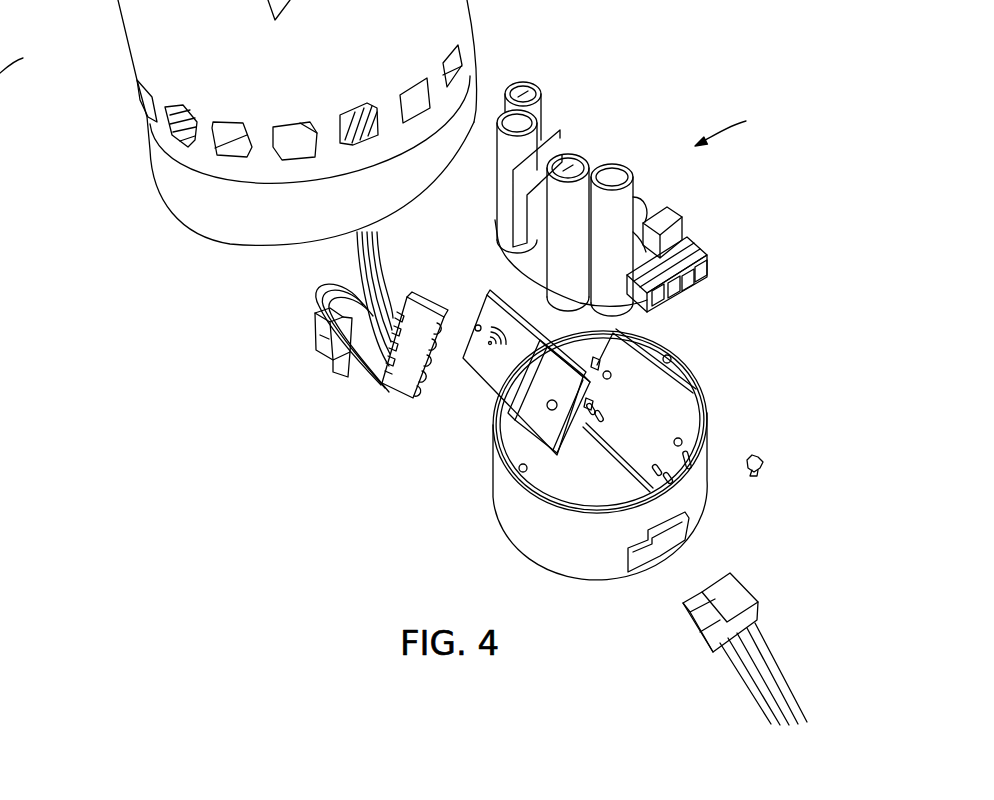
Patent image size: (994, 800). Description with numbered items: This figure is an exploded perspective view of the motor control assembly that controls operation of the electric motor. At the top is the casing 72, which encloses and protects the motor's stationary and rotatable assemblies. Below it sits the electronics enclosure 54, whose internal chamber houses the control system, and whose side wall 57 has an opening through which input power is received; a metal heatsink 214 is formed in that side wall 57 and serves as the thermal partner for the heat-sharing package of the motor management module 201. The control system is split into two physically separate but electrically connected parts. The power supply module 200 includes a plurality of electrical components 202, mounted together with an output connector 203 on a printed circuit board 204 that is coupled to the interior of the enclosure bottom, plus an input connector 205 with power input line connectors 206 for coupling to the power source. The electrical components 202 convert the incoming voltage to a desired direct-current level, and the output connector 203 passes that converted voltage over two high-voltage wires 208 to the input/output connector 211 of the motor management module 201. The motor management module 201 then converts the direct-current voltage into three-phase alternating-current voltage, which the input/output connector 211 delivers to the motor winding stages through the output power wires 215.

The casing 72 is at (130, 58).
The output power wires 215 is at (380, 248).
The high-voltage wires 208 is at (367, 367).
The output connector 203 is at (327, 330).
The input/output connector 211 is at (393, 380).
The motor management module 201 is at (497, 370).
The electronics enclosure 54 is at (498, 502).
The side wall 57 is at (553, 540).
The metal heatsink 214 is at (663, 398).
The power supply module 200 is at (741, 130).
The electrical components 202 is at (570, 168).
The printed circuit board 204 is at (527, 255).
The input connector 205 is at (690, 243).
The power input line connectors 206 is at (760, 657).